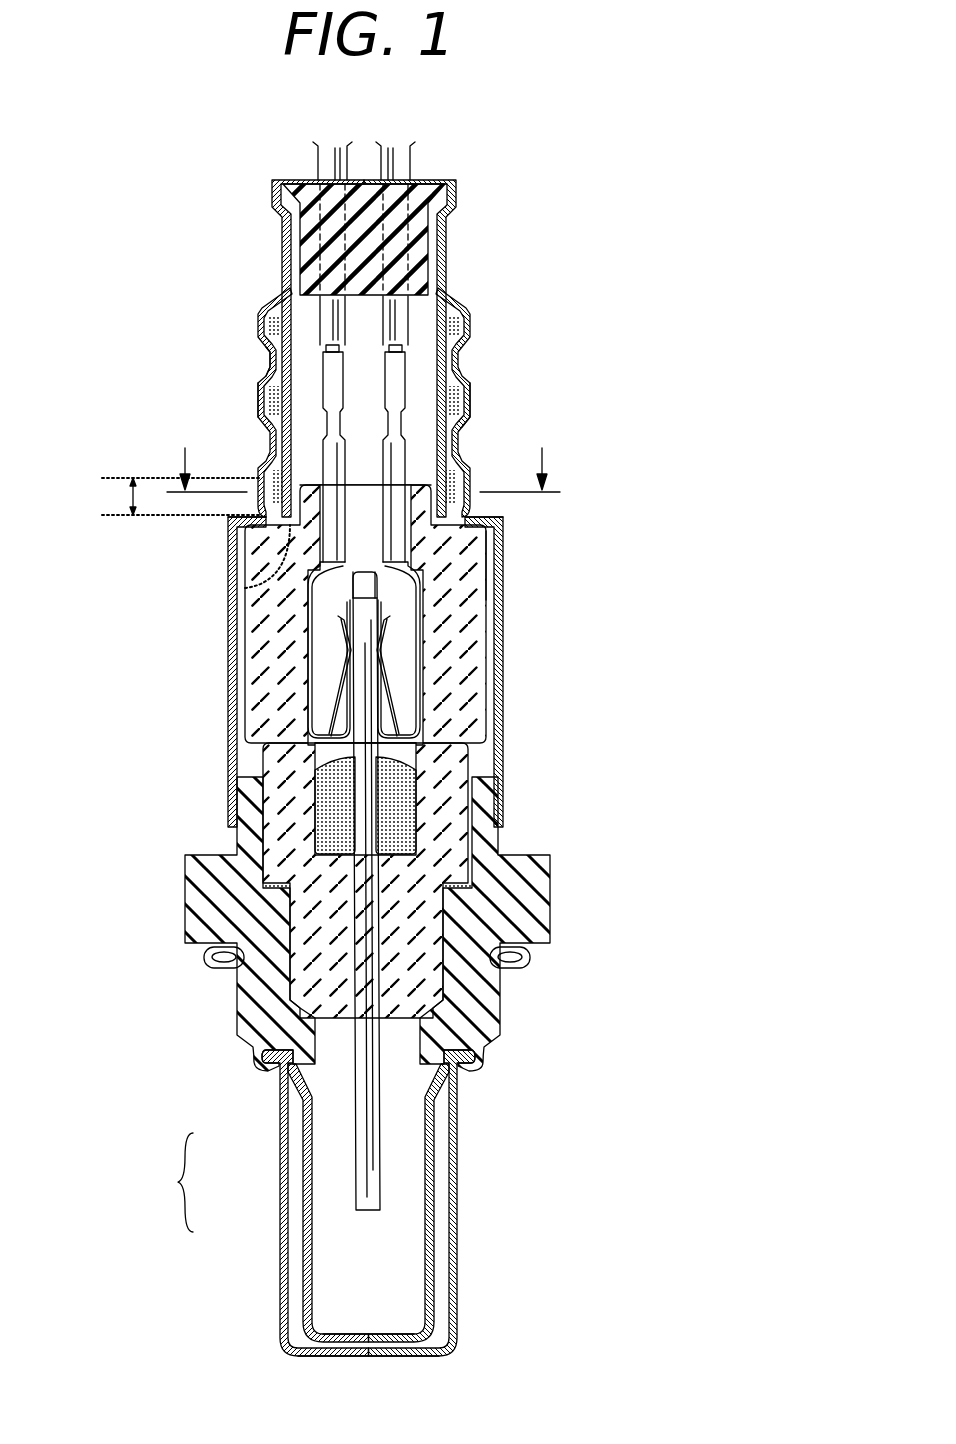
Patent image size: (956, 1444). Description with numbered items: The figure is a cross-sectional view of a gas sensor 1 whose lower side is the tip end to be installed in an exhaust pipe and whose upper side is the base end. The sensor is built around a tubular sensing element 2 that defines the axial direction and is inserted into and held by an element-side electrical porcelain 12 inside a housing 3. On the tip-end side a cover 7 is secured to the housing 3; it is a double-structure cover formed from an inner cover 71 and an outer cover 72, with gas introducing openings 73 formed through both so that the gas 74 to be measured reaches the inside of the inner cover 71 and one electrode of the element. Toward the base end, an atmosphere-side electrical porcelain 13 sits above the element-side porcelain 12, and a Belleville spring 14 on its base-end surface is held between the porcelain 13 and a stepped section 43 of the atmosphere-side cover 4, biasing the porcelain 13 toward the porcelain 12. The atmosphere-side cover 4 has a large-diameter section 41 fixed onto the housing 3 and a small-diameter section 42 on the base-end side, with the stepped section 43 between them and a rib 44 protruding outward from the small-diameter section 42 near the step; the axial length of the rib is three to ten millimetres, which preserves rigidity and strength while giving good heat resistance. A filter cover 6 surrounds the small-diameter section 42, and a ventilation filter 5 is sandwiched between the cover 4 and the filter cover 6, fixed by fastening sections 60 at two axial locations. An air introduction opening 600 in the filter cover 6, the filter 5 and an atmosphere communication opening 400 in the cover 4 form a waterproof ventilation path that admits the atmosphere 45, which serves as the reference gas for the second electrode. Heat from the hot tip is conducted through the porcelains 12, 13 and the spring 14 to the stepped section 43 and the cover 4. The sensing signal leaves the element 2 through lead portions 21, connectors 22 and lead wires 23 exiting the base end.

The gas sensor 1 is at (364, 746).
The sensing element 2 is at (367, 1183).
The housing 3 is at (513, 899).
The atmosphere-side cover 4 is at (360, 672).
The ventilation filter 5 is at (470, 392).
The filter cover 6 is at (257, 317).
The cover 7 is at (342, 1203).
The element-side electrical porcelain 12 is at (315, 987).
The atmosphere-side electrical porcelain 13 is at (470, 717).
The Belleville spring 14 is at (473, 550).
The lead portion 21 is at (300, 692).
The connector 22 is at (440, 455).
The lead wire 23 is at (400, 162).
The large-diameter section 41 is at (228, 665).
The small-diameter section 42 is at (268, 357).
The stepped section 43 is at (228, 547).
The rib 44 is at (498, 527).
The atmosphere 45 is at (263, 422).
The fastening section 60 is at (472, 340).
The inner cover 71 is at (300, 1152).
The outer cover 72 is at (285, 1215).
The gas introducing opening 73 is at (283, 1292).
The gas to be measured 74 is at (387, 1280).
The atmosphere communication opening 400 is at (257, 393).
The air introduction opening 600 is at (470, 402).